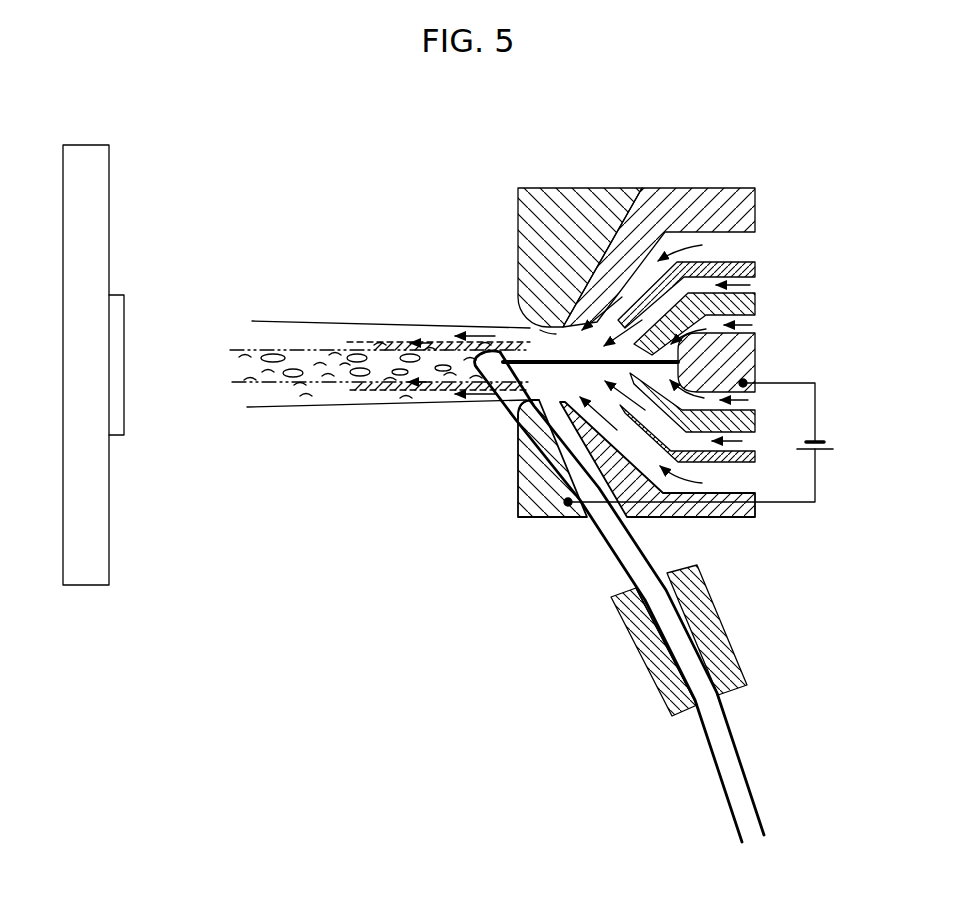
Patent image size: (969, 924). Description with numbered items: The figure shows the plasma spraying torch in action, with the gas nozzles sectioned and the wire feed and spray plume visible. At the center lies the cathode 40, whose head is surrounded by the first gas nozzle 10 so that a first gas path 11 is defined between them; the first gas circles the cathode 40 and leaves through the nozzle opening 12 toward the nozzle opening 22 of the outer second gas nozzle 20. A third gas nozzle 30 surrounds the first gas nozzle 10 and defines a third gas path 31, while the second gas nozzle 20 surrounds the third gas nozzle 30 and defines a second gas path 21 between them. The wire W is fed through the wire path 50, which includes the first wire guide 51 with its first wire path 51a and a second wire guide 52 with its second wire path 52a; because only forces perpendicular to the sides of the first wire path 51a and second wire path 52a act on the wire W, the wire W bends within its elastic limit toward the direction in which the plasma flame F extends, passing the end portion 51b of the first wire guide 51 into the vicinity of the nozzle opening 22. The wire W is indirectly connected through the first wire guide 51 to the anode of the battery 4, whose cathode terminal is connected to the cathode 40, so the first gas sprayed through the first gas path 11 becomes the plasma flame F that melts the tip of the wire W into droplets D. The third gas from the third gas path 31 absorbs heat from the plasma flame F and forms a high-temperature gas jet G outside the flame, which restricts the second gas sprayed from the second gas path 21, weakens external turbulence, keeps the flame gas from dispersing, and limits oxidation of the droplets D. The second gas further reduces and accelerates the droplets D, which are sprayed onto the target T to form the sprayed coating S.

The battery 4 is at (838, 438).
The first gas nozzle 10 is at (750, 306).
The first gas path 11 is at (755, 328).
The nozzle opening 12 is at (625, 357).
The second gas nozzle 20 is at (750, 204).
The second gas path 21 is at (748, 242).
The nozzle opening 22 is at (543, 336).
The third gas nozzle 30 is at (746, 270).
The third gas path 31 is at (752, 288).
The cathode 40 is at (748, 358).
The wire path 50 is at (595, 565).
The first wire guide 51 is at (597, 462).
The first wire path 51a is at (573, 477).
The contact tip end 51b is at (522, 403).
The wire guide 52 is at (651, 644).
The second wire path 52a is at (638, 655).
The wire W is at (618, 560).
The target T is at (88, 157).
The sprayed coating S is at (119, 323).
The droplets D is at (274, 355).
The high-temperature gas jet G is at (423, 342).
The plasma flame F is at (342, 380).